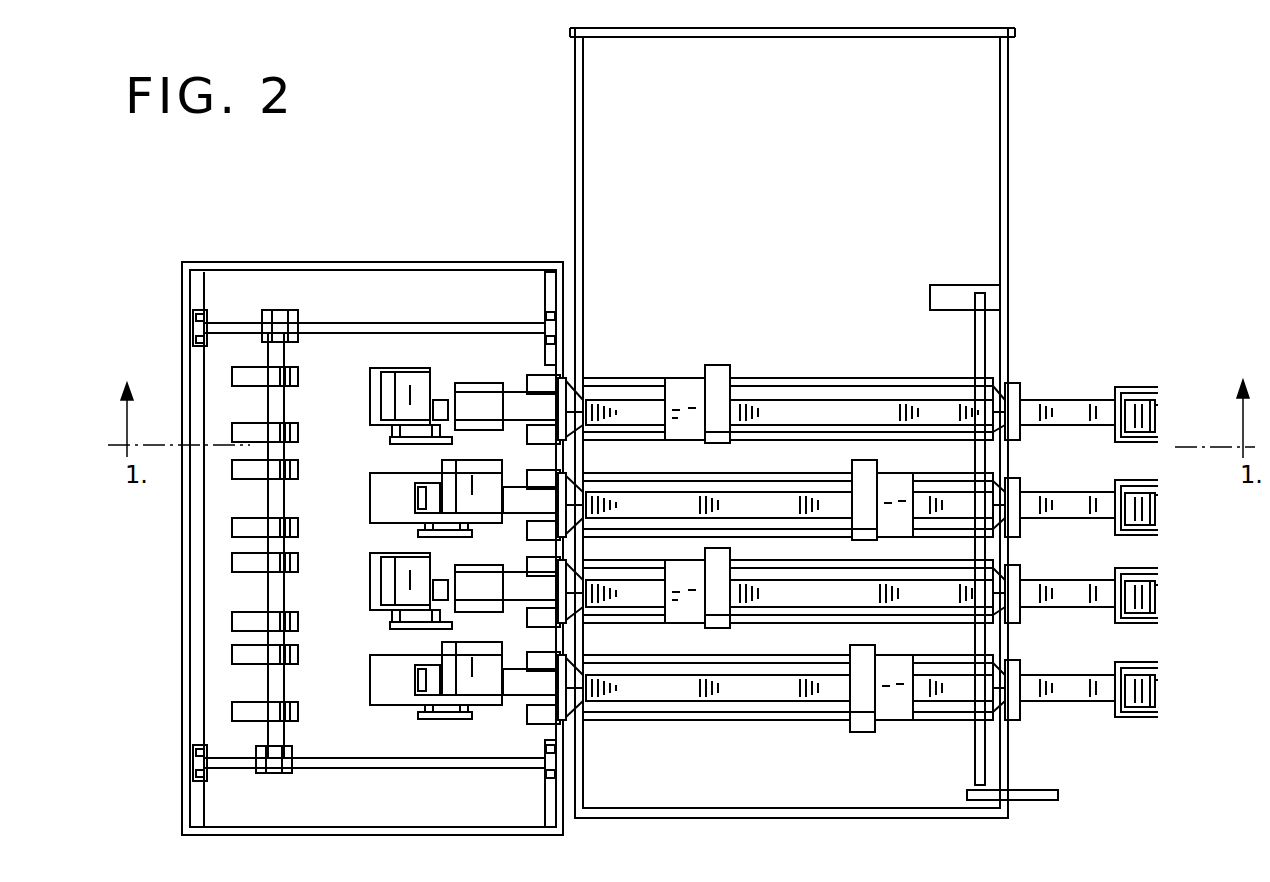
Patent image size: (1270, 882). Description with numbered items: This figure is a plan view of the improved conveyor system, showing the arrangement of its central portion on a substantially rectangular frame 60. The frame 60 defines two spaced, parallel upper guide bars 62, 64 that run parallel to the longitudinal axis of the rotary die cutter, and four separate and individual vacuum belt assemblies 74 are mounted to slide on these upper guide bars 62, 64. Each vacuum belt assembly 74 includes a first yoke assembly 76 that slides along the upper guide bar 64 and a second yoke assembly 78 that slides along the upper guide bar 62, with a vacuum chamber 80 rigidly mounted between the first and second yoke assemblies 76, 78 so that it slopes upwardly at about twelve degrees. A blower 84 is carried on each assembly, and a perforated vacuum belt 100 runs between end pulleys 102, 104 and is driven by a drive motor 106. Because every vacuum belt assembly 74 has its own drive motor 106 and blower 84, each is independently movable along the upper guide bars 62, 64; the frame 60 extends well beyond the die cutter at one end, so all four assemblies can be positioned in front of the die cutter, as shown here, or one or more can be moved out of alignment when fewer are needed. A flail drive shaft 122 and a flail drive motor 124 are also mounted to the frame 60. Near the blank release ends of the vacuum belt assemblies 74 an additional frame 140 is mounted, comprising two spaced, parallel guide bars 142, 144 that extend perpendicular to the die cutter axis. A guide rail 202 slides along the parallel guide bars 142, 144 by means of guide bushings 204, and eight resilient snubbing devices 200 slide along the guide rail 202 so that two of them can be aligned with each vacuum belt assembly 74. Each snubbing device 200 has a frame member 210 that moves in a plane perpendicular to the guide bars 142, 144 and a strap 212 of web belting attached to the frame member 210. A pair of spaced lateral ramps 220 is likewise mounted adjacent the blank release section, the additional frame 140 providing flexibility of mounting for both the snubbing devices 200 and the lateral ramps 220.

The frame 60 is at (794, 423).
The upper guide bar 62 is at (575, 155).
The upper guide bar 64 is at (1010, 160).
The vacuum belt assembly 74 is at (846, 400).
The first yoke assembly 76 is at (1012, 440).
The second yoke assembly 78 is at (578, 440).
The vacuum chamber 80 is at (1072, 400).
The blower 84 is at (722, 443).
The perforated vacuum belt 100 is at (418, 498).
The end pulley 102 is at (440, 400).
The end pulley 104 is at (1160, 415).
The drive motor 106 is at (390, 375).
The flail drive shaft 122 is at (985, 332).
The flail drive motor 124 is at (960, 290).
The additional frame 140 is at (160, 544).
The guide bar 142 is at (205, 765).
The guide bar 144 is at (327, 323).
The resilient snubbing device 200 is at (227, 525).
The guide rail 202 is at (272, 598).
The guide bushing 204 is at (270, 310).
The frame member 210 is at (250, 386).
The strap 212 is at (300, 380).
The lateral ramp 220 is at (528, 375).